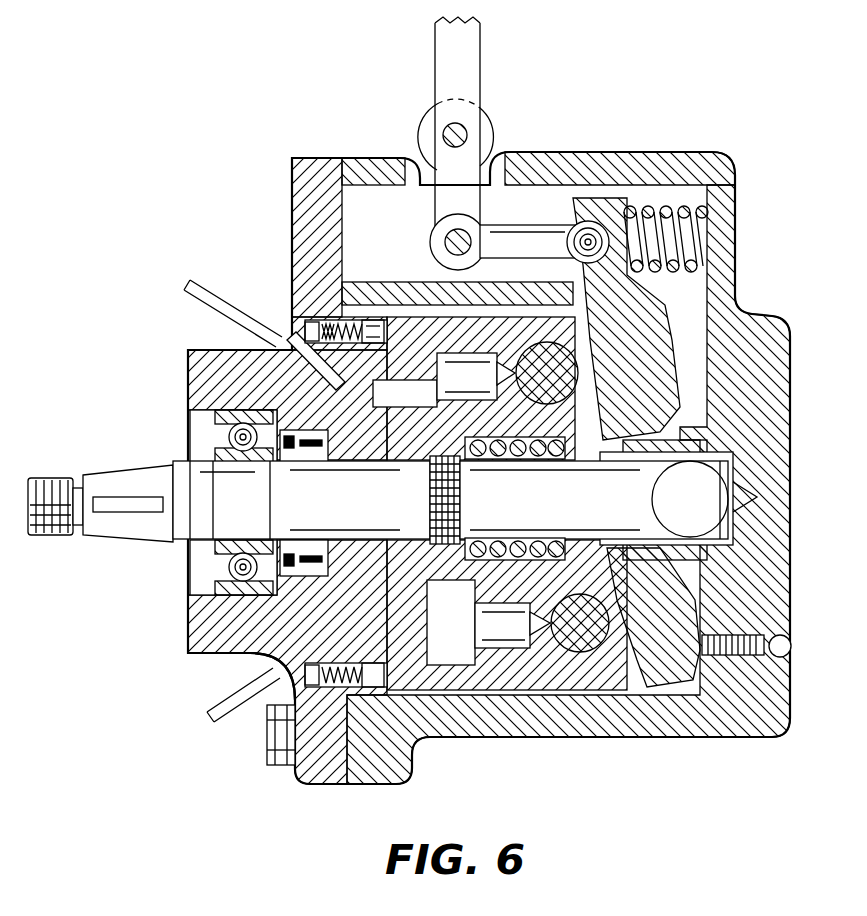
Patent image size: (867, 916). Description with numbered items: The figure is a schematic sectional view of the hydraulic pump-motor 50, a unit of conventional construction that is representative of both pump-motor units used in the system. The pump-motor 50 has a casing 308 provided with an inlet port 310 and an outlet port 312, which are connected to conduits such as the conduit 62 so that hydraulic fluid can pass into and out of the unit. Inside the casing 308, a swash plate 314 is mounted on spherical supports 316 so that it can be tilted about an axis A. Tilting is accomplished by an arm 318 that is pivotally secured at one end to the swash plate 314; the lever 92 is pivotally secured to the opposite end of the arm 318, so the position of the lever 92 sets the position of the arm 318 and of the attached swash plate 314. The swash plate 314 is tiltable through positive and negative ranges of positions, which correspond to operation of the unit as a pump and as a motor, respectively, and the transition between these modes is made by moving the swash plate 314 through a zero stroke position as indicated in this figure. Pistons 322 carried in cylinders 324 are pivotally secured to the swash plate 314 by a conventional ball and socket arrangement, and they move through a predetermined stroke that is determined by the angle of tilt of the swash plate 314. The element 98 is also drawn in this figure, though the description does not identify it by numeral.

The hydraulic pump-motor 50 is at (645, 148).
The conduit 62 is at (230, 310).
The lever 92 is at (465, 78).
The outlet conduit 98 is at (227, 712).
The casing 308 is at (623, 723).
The inlet port 310 is at (252, 660).
The outlet port 312 is at (292, 327).
The swash plate 314 is at (670, 668).
The spherical supports 316 is at (541, 400).
The arm 318 is at (508, 237).
The pistons 322 is at (548, 653).
The cylinders 324 is at (455, 652).
The axis A is at (550, 457).